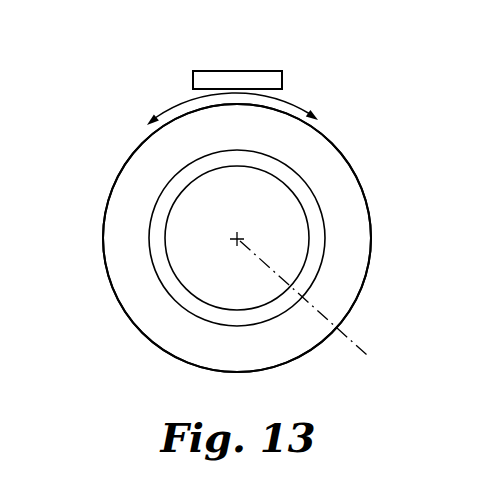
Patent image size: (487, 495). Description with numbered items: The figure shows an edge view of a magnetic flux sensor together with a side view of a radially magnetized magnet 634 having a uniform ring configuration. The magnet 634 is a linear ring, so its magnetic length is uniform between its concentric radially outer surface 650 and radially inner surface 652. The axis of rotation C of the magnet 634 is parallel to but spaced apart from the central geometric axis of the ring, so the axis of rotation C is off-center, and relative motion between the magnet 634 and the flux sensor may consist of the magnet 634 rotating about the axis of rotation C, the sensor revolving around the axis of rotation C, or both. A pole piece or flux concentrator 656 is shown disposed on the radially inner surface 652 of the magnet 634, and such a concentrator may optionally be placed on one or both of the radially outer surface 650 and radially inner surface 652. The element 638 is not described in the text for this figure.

The magnet 634 is at (343, 162).
The magnet 638 is at (242, 70).
The radially outer surface 650 is at (372, 242).
The radially inner surface 652 is at (308, 239).
The flux concentrator 656 is at (167, 243).
The axis of rotation C is at (306, 299).